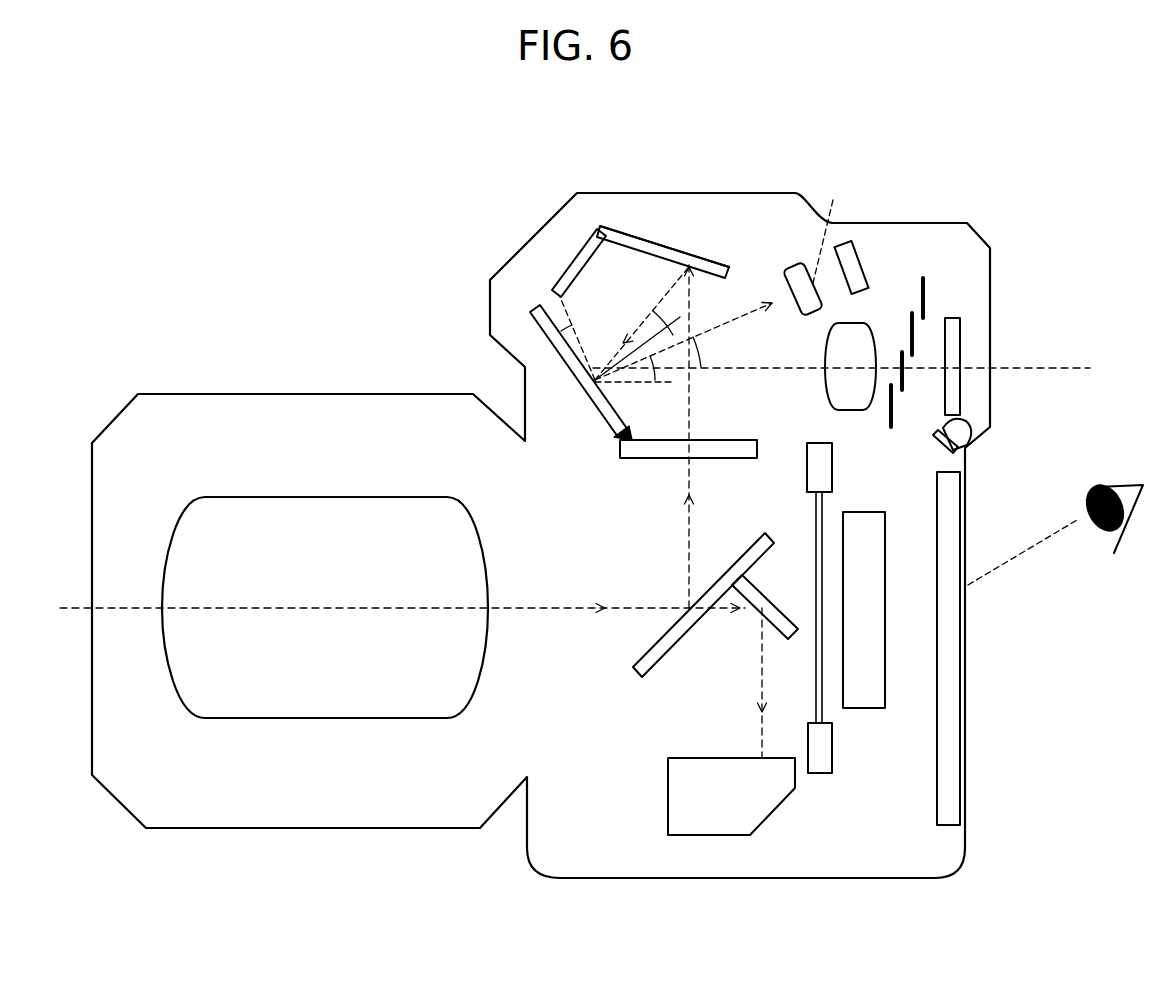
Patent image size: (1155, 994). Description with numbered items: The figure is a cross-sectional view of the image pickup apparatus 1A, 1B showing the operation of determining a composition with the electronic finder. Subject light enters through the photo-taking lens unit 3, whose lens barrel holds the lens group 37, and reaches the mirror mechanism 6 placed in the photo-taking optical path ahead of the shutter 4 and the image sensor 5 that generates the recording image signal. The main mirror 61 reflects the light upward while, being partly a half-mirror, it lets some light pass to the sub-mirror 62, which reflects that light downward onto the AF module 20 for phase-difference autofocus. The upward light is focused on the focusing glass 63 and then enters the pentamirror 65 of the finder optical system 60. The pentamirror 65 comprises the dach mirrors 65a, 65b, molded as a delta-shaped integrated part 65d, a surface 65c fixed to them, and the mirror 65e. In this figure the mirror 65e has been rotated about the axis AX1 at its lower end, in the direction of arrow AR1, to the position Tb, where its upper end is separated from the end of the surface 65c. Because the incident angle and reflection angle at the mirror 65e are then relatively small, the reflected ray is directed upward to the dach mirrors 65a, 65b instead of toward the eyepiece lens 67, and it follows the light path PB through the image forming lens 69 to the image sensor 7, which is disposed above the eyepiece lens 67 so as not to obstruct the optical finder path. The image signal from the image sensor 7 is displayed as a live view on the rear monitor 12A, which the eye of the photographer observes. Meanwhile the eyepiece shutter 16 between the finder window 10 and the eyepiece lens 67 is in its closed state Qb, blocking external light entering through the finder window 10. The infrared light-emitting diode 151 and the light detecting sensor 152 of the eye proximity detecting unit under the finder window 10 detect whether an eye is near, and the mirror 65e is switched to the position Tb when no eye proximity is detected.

The image pickup apparatus 1A is at (541, 510).
The camera 1B is at (255, 172).
The photo-taking lens unit 3 is at (288, 838).
The lens group 37 is at (328, 497).
The finder optical system 60 is at (560, 200).
The pentamirror 65 is at (574, 272).
The dach mirror 65a is at (675, 204).
The dach mirror 65b is at (677, 250).
The surface 65c is at (565, 265).
The integrated part 65d is at (636, 237).
The mirror 65e is at (560, 375).
The arrow AR1 is at (527, 300).
The position Tb is at (586, 410).
The axis AX1 is at (612, 442).
The focusing glass 63 is at (637, 460).
The image forming lens 69 is at (798, 262).
The light path PB is at (831, 226).
The image sensor 7 is at (862, 240).
The eyepiece shutter 16 is at (921, 270).
The closed state Qb is at (933, 296).
The finder window 10 is at (972, 330).
The eyepiece lens 67 is at (828, 395).
The infrared light-emitting diode 151 is at (1033, 442).
The light detecting sensor 152 is at (983, 435).
The rear monitor 12A is at (965, 638).
The image sensor 5 is at (866, 512).
The shutter 4 is at (818, 775).
The mirror mechanism 6 is at (681, 631).
The main mirror 61 is at (640, 650).
The sub-mirror 62 is at (777, 597).
The AF module 20 is at (708, 836).